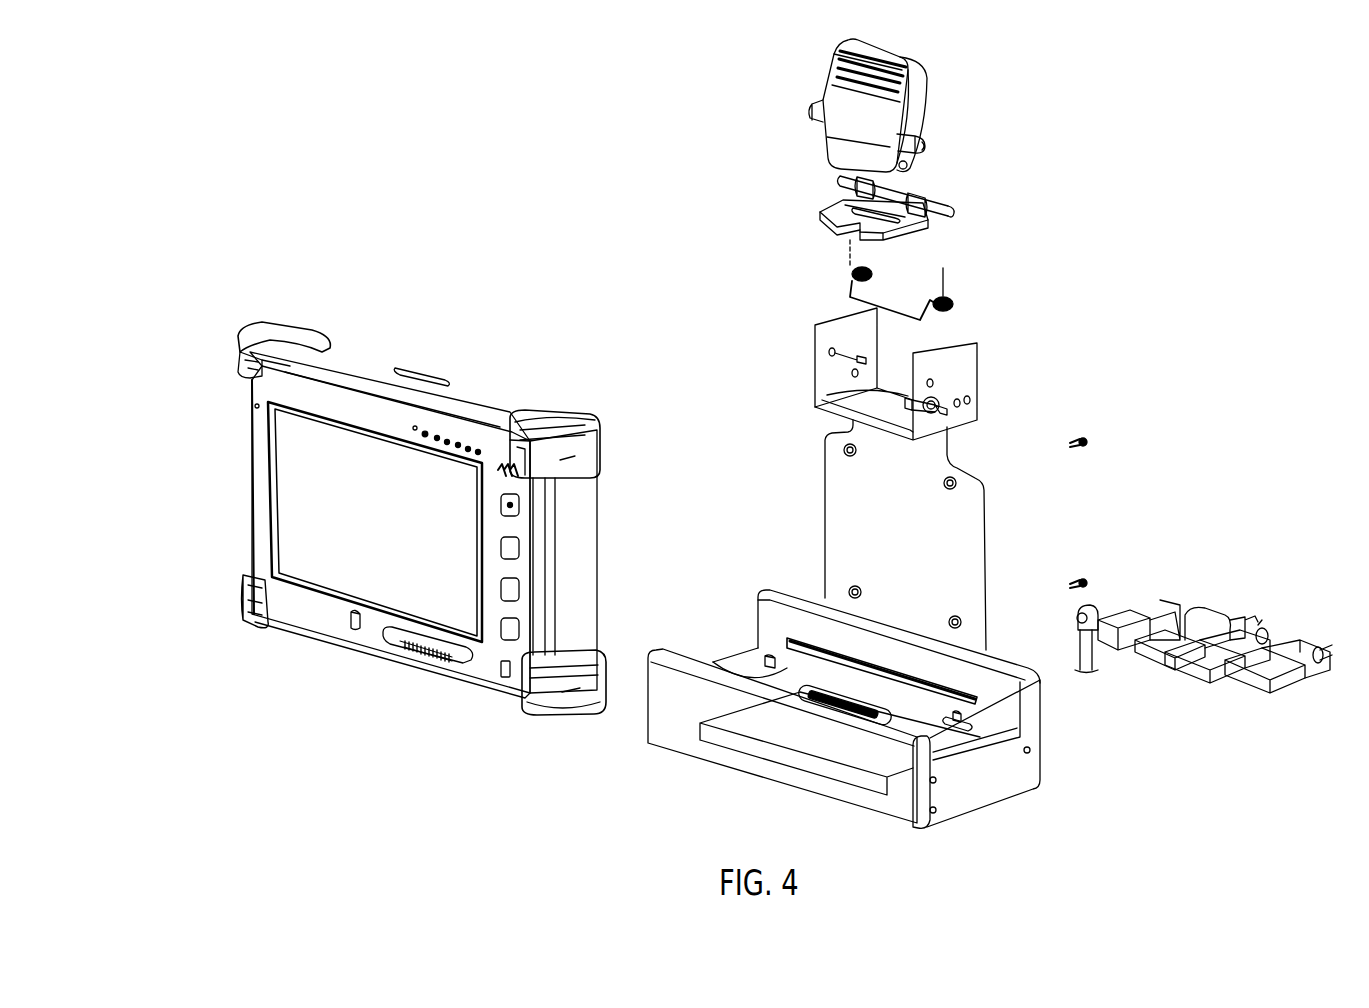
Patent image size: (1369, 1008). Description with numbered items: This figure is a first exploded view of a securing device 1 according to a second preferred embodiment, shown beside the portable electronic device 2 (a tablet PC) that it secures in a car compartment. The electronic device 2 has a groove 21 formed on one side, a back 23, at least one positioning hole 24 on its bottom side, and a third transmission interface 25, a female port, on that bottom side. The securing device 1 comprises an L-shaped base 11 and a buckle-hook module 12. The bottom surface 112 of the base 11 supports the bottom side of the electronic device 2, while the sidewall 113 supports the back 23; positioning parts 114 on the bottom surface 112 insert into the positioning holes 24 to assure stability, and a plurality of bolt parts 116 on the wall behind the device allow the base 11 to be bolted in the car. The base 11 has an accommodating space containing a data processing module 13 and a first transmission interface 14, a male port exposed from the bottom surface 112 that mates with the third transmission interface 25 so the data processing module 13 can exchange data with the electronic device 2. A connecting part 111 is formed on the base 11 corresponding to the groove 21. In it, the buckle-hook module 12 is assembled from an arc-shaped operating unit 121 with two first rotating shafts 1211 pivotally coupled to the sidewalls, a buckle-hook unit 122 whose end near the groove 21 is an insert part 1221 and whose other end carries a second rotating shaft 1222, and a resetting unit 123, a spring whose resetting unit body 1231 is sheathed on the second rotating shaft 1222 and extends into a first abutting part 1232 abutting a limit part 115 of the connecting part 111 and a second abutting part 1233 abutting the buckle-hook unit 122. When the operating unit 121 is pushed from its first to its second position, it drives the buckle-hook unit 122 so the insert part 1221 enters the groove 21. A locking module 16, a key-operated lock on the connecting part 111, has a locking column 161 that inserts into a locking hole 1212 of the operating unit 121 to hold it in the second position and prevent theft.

The securing device 1 is at (706, 111).
The electronic device 2 is at (226, 318).
The base 11 is at (690, 742).
The buckle-hook module 12 is at (1086, 124).
The data processing module 13 is at (848, 776).
The first transmission interface 14 is at (812, 700).
The locking module 16 is at (950, 410).
The groove 21 is at (430, 373).
The back 23 is at (597, 548).
The positioning hole 24 is at (347, 620).
The third transmission interface 25 is at (397, 640).
The connecting part 111 is at (970, 385).
The bottom surface 112 is at (790, 648).
The sidewall 113 is at (958, 575).
The positioning part 114 is at (957, 722).
The limit part 115 is at (815, 325).
The bolt parts 116 is at (843, 452).
The operating unit 121 is at (917, 82).
The first rotating shaft 1211 is at (922, 142).
The locking hole 1212 is at (915, 158).
The buckle-hook unit 122 is at (837, 203).
The insert part 1221 is at (835, 233).
The second rotating shaft 1222 is at (955, 205).
The resetting unit 123 is at (1100, 242).
The resetting unit body 1231 is at (956, 301).
The first abutting part 1232 is at (946, 268).
The second abutting part 1233 is at (948, 322).
The locking column 161 is at (815, 392).